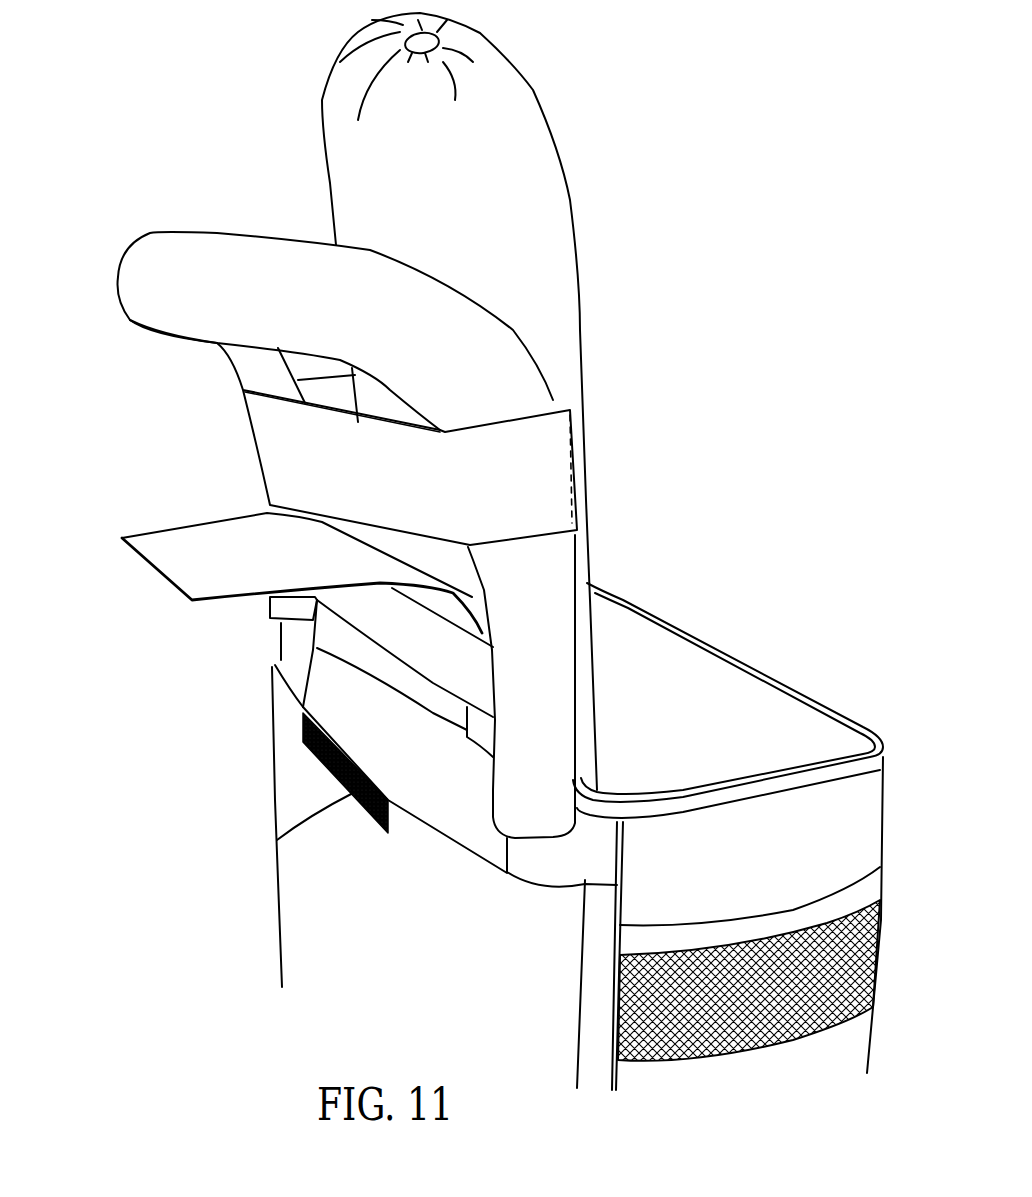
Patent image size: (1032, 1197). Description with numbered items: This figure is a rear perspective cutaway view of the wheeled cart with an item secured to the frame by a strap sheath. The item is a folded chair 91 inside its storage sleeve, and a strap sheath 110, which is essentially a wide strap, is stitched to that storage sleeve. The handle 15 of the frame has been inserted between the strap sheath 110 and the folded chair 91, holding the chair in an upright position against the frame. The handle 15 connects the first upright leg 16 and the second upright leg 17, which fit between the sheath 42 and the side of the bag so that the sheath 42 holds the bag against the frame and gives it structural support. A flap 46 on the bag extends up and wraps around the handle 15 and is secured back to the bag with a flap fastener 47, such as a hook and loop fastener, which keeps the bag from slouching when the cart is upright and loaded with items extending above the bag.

The folded chair 91 is at (553, 133).
The handle 15 is at (120, 260).
The strap sheath 110 is at (278, 448).
The flap 46 is at (160, 570).
The first upright leg 16 is at (290, 643).
The flap fastener 47 is at (277, 840).
The sheath 42 is at (435, 930).
The second upright leg 17 is at (540, 860).